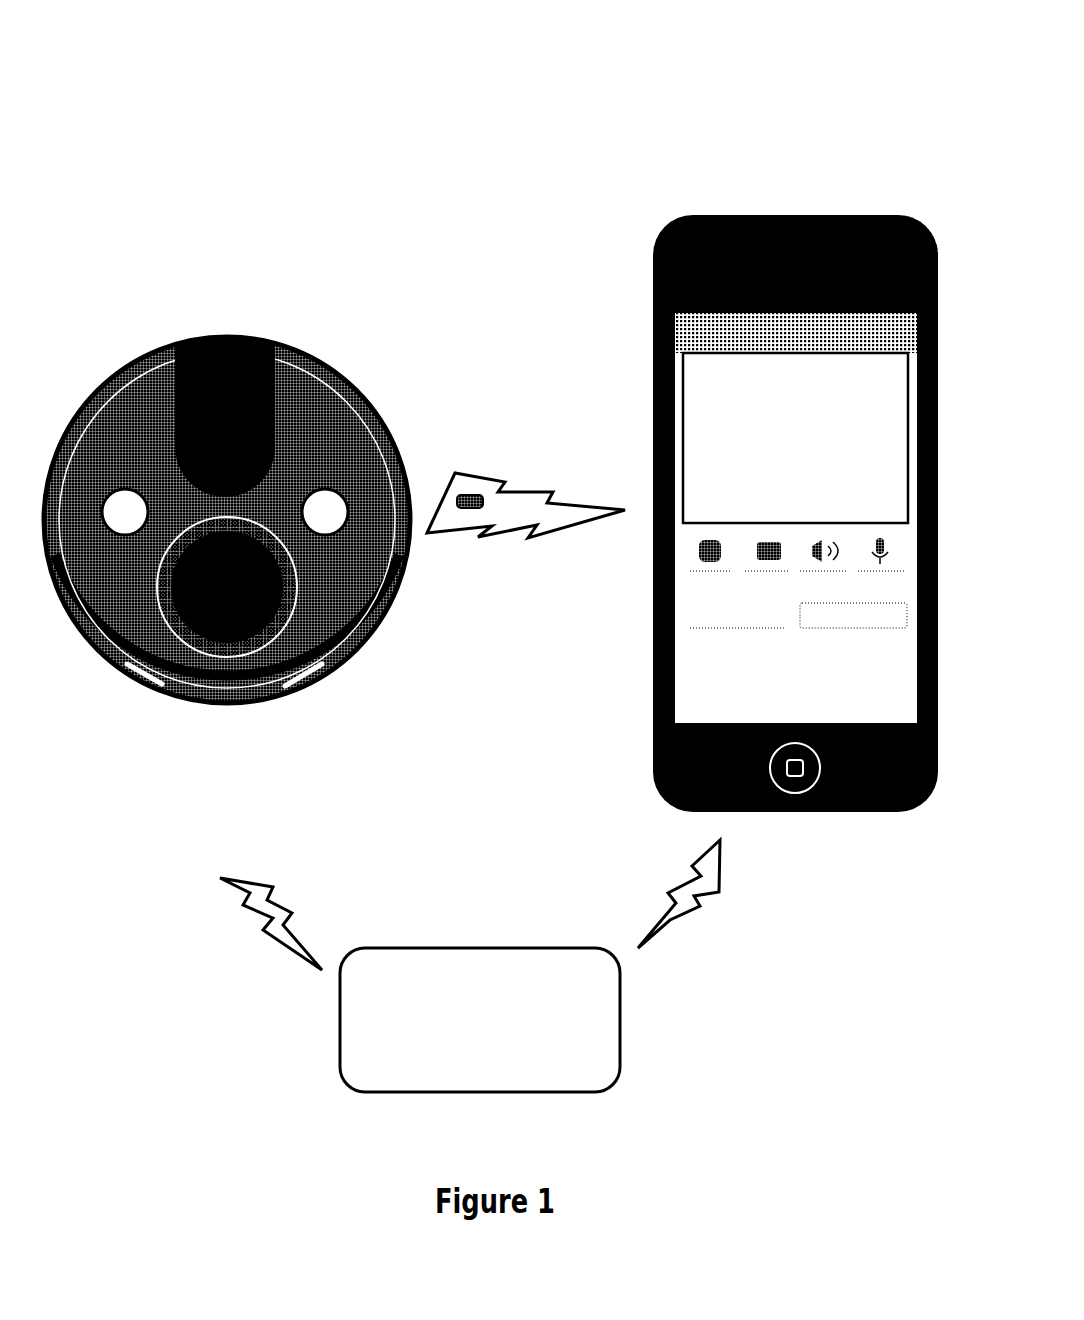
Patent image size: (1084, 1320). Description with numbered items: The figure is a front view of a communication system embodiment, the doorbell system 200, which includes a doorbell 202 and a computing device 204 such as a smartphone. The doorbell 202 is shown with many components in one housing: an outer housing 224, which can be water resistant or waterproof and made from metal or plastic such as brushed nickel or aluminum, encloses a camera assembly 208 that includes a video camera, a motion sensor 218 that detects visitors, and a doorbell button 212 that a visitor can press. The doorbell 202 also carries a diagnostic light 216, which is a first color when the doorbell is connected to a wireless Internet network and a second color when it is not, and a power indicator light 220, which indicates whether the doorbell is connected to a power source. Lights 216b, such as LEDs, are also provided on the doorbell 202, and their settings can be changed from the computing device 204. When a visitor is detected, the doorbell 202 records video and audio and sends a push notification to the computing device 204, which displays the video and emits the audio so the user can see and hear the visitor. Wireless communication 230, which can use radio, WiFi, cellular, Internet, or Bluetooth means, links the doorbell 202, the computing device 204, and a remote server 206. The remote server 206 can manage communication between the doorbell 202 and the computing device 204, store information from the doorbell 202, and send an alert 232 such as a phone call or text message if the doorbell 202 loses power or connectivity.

The doorbell system 200 is at (507, 84).
The doorbell 202 is at (182, 273).
The computing device 204 is at (749, 158).
The remote server 206 is at (620, 1020).
The camera assembly 208 is at (249, 437).
The doorbell button 212 is at (202, 623).
The diagnostic light 216 is at (253, 608).
The light 216b is at (124, 488).
The motion sensor 218 is at (228, 382).
The power indicator light 220 is at (232, 623).
The outer housing 224 is at (154, 704).
The wireless communication 230 is at (479, 537).
The alert 232 is at (470, 495).